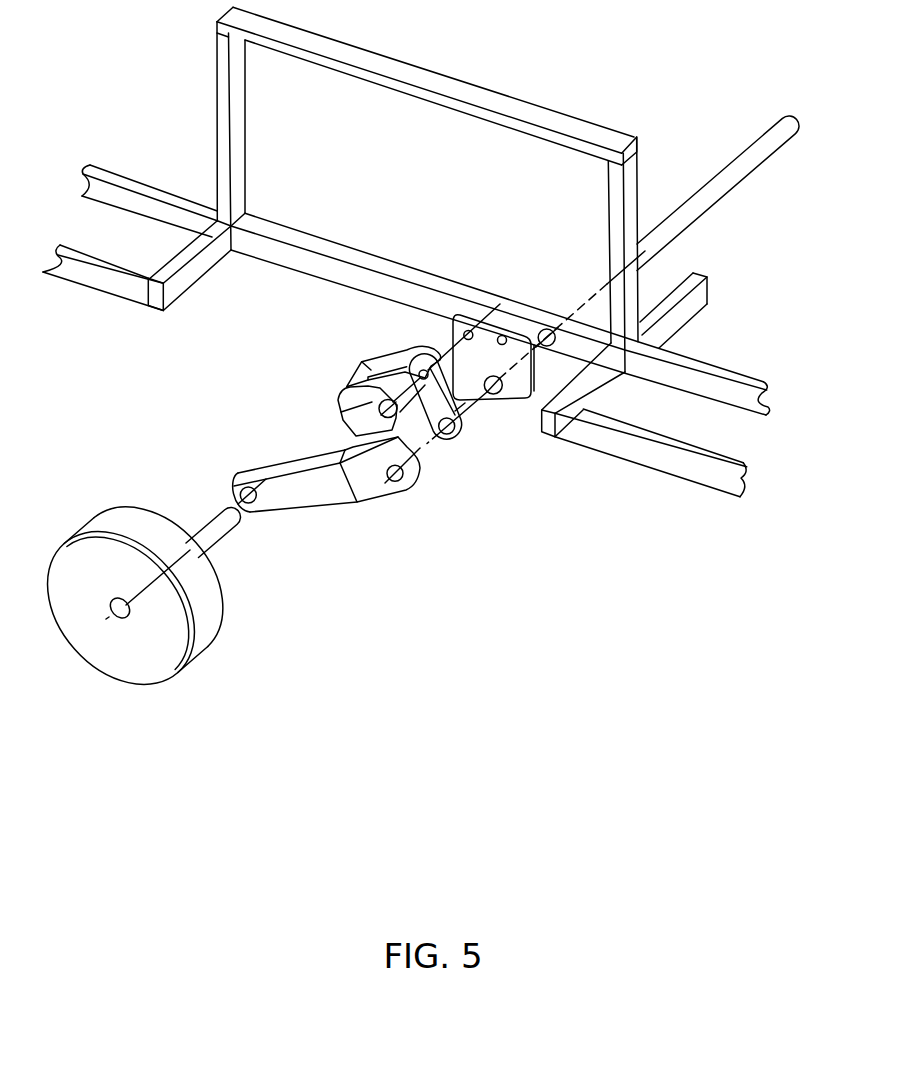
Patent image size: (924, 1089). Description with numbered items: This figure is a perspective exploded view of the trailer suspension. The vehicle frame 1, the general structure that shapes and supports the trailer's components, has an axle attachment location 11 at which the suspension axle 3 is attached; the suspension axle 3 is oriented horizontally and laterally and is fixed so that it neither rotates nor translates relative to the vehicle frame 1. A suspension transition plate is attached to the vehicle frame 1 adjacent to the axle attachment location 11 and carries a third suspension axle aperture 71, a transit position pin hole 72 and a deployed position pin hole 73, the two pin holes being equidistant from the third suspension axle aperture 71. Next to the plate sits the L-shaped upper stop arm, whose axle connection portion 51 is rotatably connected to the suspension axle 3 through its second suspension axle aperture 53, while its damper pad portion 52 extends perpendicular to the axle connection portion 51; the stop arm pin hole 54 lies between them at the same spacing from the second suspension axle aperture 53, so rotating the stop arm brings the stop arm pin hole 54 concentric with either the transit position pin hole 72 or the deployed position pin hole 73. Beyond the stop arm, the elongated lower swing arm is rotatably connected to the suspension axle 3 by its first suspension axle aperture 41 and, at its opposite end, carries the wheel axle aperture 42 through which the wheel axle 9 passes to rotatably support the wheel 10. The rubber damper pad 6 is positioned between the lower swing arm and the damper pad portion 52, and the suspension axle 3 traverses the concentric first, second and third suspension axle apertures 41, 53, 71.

The vehicle frame 1 is at (362, 227).
The suspension axle 3 is at (728, 178).
The rubber damper pad 6 is at (348, 415).
The wheel axle 9 is at (227, 523).
The wheel 10 is at (140, 665).
The axle attachment location 11 is at (546, 329).
The first suspension axle aperture 41 is at (397, 483).
The wheel axle aperture 42 is at (237, 489).
The axle connection portion 51 is at (459, 408).
The damper pad portion 52 is at (377, 371).
The second suspension axle aperture 53 is at (450, 438).
The stop arm pin hole 54 is at (419, 349).
The third suspension axle aperture 71 is at (494, 394).
The transit position pin hole 72 is at (468, 330).
The deployed position pin hole 73 is at (503, 335).